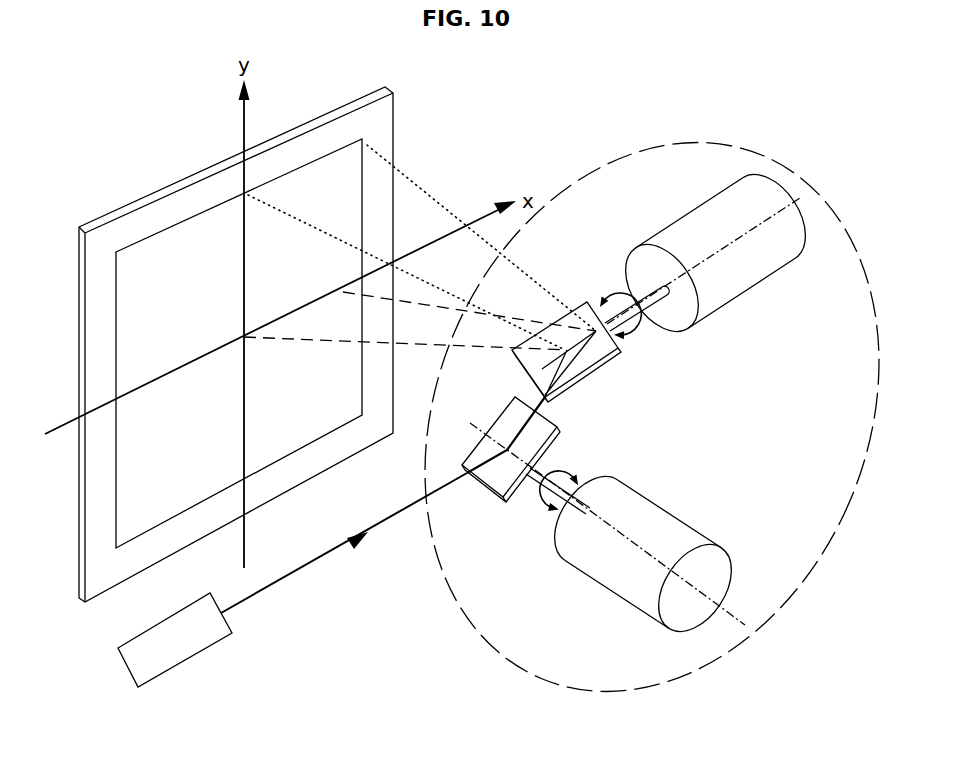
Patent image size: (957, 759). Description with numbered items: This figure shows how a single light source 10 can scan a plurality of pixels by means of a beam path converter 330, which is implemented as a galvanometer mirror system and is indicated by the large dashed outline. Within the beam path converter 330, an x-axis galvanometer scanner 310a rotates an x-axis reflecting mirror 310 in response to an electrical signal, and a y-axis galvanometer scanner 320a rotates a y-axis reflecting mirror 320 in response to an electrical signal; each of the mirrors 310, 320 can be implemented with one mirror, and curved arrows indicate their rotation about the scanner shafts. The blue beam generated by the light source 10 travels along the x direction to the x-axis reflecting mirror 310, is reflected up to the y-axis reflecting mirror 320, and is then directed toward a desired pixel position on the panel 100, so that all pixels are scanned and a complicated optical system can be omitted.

The light source 10 is at (135, 665).
The display panel 100 is at (140, 200).
The x-axis reflecting mirror 310 is at (490, 478).
The x-axis galvanometer scanner 310a is at (620, 578).
The y-axis reflecting mirror 320 is at (607, 360).
The y-axis galvanometer scanner 320a is at (743, 278).
The beam path converter 330 is at (780, 138).